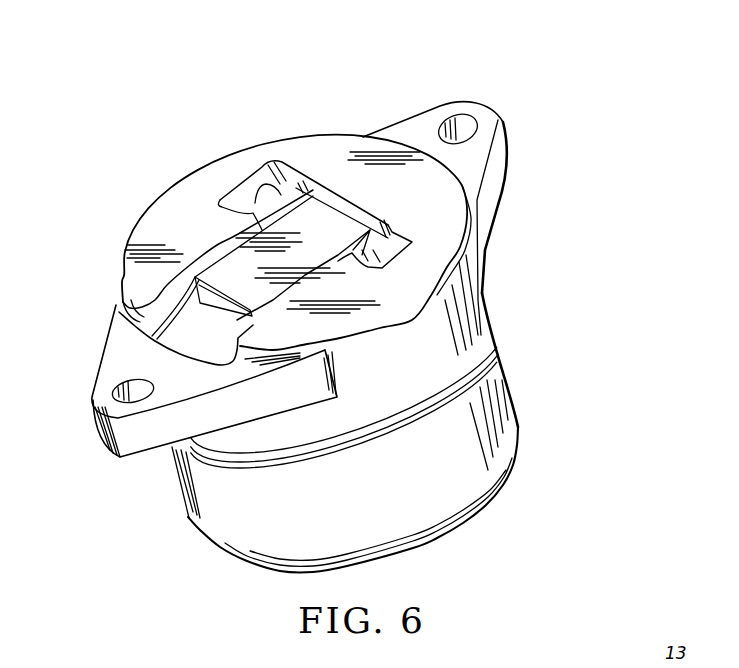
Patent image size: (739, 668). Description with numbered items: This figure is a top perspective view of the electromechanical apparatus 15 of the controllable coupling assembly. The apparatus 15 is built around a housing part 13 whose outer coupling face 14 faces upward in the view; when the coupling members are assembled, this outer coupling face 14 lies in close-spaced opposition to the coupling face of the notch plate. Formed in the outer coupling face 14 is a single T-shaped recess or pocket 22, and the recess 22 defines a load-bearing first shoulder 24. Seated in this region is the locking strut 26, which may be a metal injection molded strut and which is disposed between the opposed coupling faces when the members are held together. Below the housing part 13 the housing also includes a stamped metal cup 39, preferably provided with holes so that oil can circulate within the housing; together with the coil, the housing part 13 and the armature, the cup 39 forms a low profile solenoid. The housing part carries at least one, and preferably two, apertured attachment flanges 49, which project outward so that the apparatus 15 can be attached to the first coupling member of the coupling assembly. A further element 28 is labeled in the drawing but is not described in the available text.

The housing part 13 is at (267, 145).
The outer coupling face 14 is at (395, 279).
The electromechanical apparatus 15 is at (327, 126).
The T-shaped recess or pocket 22 is at (203, 342).
The load-bearing first shoulder 24 is at (345, 199).
The locking strut 26 is at (223, 233).
The top surface 28 is at (318, 157).
The stamped metal cup 39 is at (505, 473).
The apertured attachment flange 49 is at (505, 122).